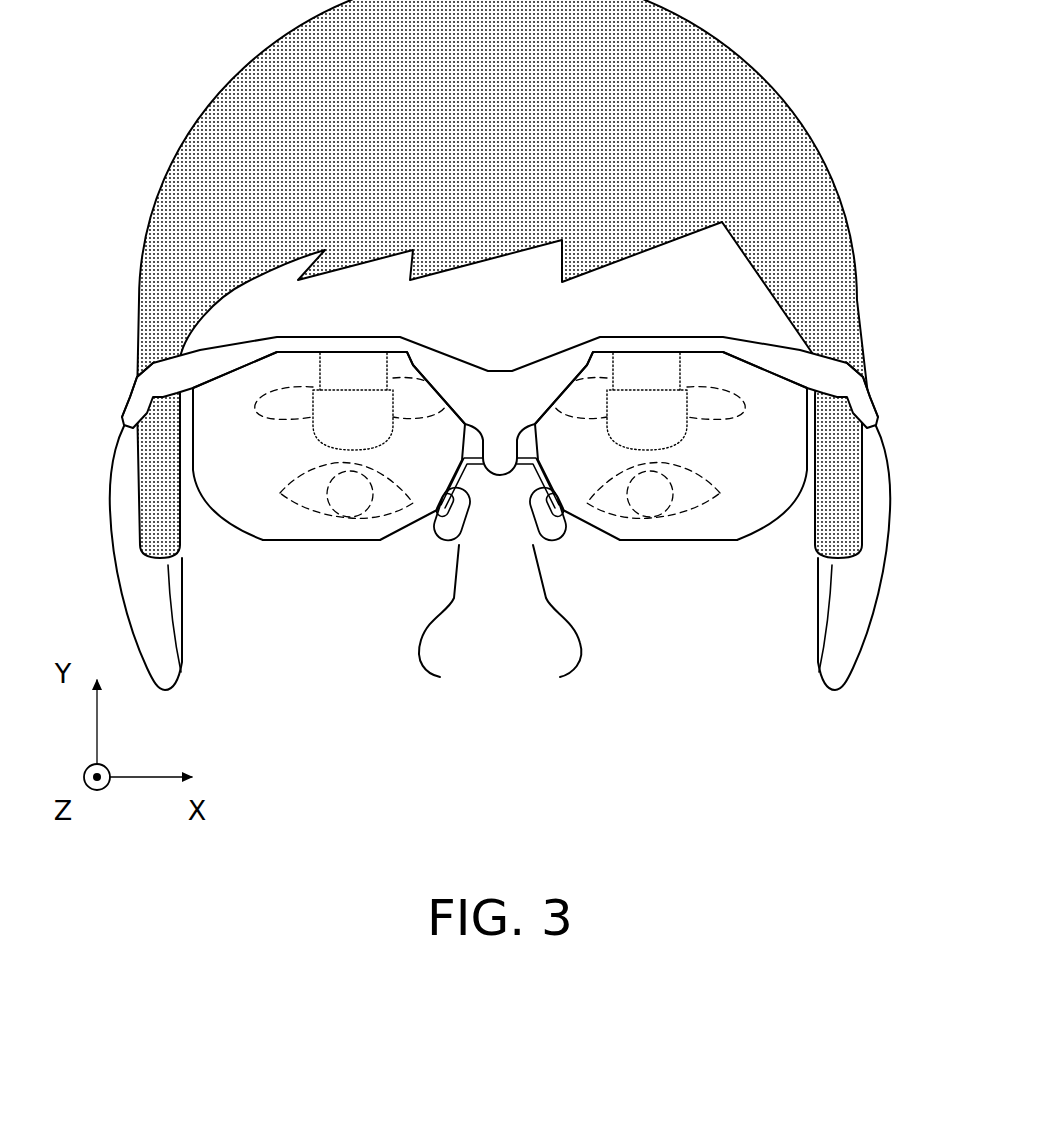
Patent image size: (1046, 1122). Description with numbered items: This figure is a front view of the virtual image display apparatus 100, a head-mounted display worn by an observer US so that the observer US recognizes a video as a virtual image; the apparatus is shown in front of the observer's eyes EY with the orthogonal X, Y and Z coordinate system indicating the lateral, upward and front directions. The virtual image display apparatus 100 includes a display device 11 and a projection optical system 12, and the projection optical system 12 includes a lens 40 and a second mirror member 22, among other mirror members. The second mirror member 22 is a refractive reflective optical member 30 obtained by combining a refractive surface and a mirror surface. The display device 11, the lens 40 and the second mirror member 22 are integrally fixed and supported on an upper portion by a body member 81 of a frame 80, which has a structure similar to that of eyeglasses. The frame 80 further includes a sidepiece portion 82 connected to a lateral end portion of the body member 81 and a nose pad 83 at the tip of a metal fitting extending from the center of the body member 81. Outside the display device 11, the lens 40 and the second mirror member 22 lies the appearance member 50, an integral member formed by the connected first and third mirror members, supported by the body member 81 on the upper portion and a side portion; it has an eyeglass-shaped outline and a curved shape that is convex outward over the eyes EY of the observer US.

The observer US is at (148, 225).
The virtual image display apparatus 100 is at (500, 402).
The frame 80 is at (500, 427).
The body member 81 is at (376, 338).
The sidepiece portion 82 is at (133, 417).
The nose pad 83 is at (540, 515).
The projection optical system 12 is at (455, 398).
The lens 40 is at (533, 445).
The display device 11 is at (533, 445).
The second mirror member 22 is at (530, 478).
The refractive reflective optical member 30 is at (500, 478).
The appearance member 50 is at (328, 533).
The eye of user EY is at (353, 503).